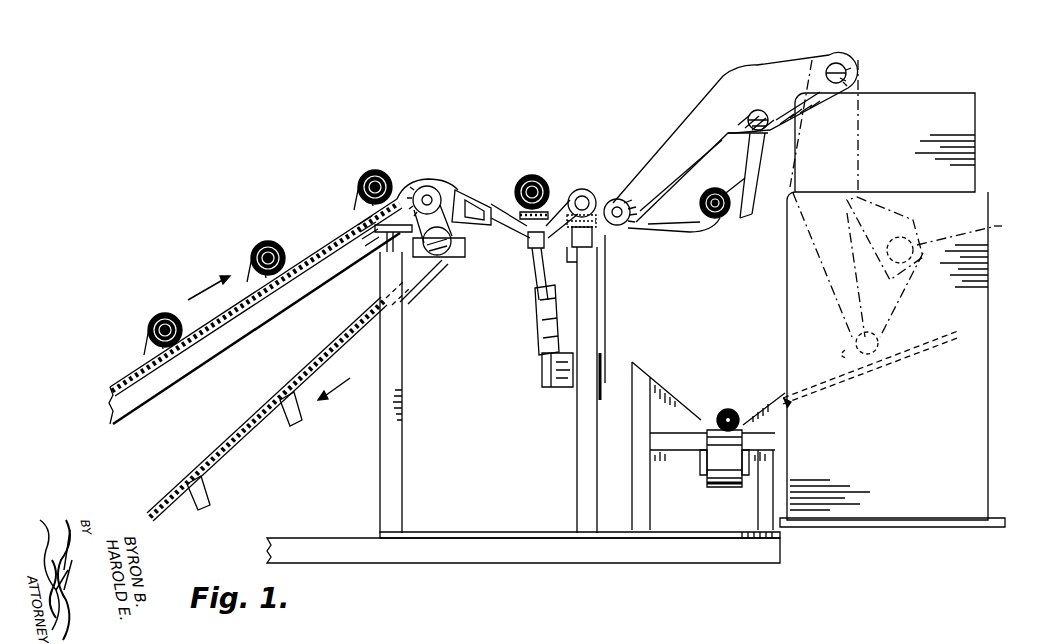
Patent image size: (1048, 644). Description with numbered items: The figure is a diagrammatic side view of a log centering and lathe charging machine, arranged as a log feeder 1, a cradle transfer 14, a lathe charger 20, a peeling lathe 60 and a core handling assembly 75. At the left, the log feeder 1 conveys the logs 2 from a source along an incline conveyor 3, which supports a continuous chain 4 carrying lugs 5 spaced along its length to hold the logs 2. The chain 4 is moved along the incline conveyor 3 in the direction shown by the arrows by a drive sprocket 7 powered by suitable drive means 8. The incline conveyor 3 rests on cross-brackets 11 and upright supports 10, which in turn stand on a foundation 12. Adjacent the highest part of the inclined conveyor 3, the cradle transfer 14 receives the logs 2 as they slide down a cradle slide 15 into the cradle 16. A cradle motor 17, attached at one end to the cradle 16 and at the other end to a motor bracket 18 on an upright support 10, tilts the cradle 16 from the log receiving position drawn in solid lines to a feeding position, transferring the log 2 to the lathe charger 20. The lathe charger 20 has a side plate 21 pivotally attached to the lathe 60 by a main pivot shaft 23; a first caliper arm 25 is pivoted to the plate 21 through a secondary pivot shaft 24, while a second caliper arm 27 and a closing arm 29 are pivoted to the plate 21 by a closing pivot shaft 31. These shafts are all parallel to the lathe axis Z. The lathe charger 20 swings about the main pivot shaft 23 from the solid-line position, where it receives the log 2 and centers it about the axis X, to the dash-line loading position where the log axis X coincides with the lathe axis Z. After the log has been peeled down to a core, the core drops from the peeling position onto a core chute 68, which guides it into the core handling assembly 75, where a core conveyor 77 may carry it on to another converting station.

The log feeder 1 is at (206, 206).
The logs 2 is at (172, 316).
The incline conveyor 3 is at (314, 390).
The continuous chain 4 is at (127, 392).
The lugs 5 is at (152, 334).
The drive sprocket 7 is at (432, 184).
The drive means 8 is at (446, 250).
The upright supports 10 is at (407, 360).
The cross-brackets 11 is at (372, 254).
The foundation 12 is at (489, 546).
The cradle transfer 14 is at (564, 166).
The cradle slide 15 is at (484, 208).
The cradle 16 is at (576, 190).
The cradle motor 17 is at (536, 324).
The motor bracket 18 is at (538, 374).
The lathe charger 20 is at (729, 80).
The side plate 21 is at (783, 76).
The main pivot shaft 23 is at (848, 66).
The secondary pivot shaft 24 is at (632, 224).
The first caliper arm 25 is at (690, 232).
The second caliper arm 27 is at (756, 176).
The closing arm 29 is at (692, 198).
The closing pivot shaft 31 is at (758, 118).
The peeling lathe 60 is at (972, 282).
The core chute 68 is at (958, 334).
The core handling assembly 75 is at (728, 394).
The core conveyor 77 is at (724, 486).